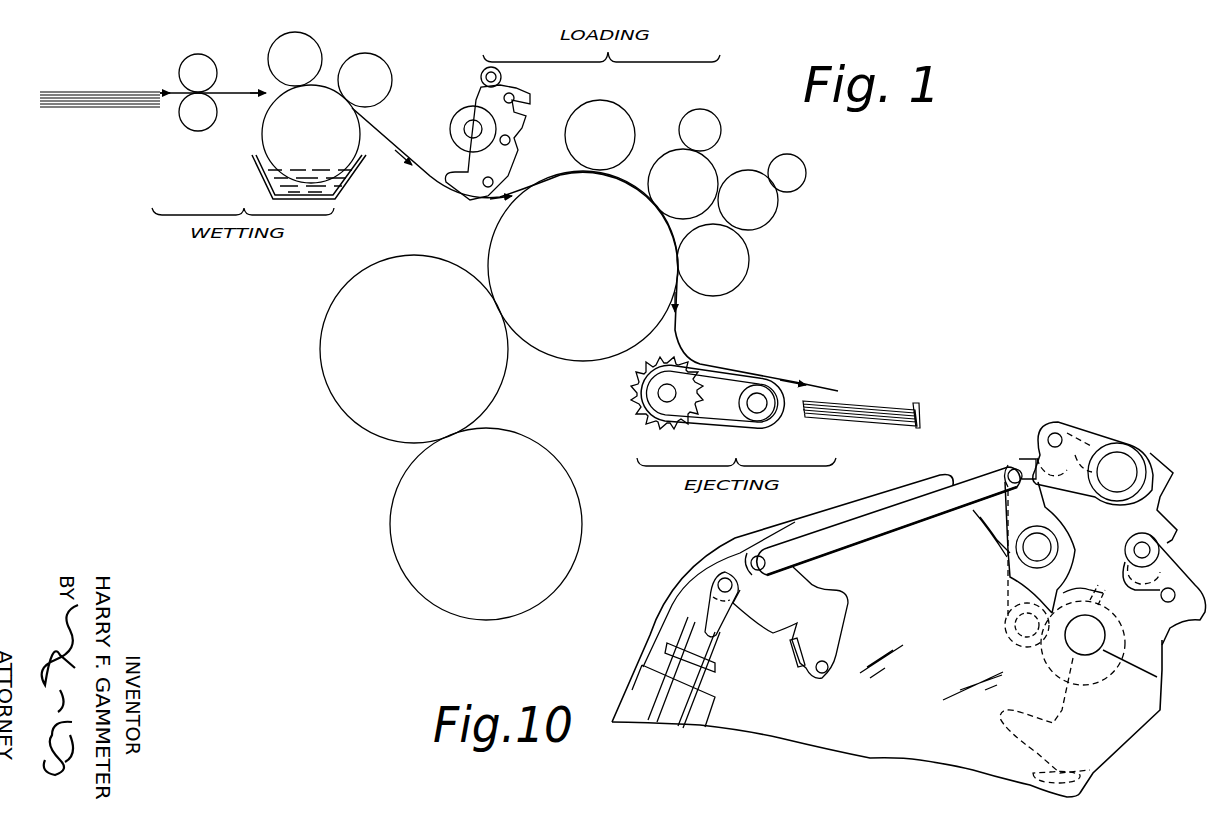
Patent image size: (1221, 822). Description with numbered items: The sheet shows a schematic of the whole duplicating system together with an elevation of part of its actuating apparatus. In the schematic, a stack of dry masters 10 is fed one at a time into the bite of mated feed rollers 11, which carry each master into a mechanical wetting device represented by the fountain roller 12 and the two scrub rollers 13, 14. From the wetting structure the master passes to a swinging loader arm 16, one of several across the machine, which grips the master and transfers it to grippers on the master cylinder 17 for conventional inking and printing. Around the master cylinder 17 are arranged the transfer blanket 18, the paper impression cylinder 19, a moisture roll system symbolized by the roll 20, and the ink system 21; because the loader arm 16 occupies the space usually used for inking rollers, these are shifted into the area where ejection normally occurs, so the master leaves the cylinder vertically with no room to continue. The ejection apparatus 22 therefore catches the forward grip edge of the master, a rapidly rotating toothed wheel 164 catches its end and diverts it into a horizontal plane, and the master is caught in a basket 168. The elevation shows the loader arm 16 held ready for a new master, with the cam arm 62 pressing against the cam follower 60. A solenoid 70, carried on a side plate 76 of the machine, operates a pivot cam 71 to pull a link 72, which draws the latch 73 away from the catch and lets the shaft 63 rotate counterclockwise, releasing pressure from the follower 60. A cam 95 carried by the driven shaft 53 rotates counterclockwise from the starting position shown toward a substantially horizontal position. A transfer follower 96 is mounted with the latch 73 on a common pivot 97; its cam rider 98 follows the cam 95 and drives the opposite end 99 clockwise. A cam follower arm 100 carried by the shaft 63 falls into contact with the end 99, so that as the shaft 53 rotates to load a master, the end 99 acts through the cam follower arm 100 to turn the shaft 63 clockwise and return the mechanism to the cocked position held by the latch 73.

In FIG. 1, the stack of dry masters 10 is at (78, 92).
In FIG. 1, the mated feed rollers 11 is at (204, 58).
In FIG. 1, the fountain roller 12 is at (309, 142).
In FIG. 1, the scrub roller 13 is at (306, 45).
In FIG. 1, the scrub roller 14 is at (378, 68).
In FIG. 1, the swinging loader arm 16 is at (505, 128).
In FIG. 1, the master cylinder 17 is at (583, 266).
In FIG. 1, the transfer blanket 18 is at (414, 349).
In FIG. 1, the paper impression cylinder 19 is at (486, 524).
In FIG. 1, the moisture roll 20 is at (600, 135).
In FIG. 1, the ink system 21 is at (740, 158).
In FIG. 1, the ejection apparatus 22 is at (742, 432).
In FIG. 1, the toothed wheel 164 is at (665, 428).
In FIG. 1, the basket 168 is at (880, 406).
In FIG. 10, the shaft 53 is at (1062, 692).
In FIG. 10, the cam follower 60 is at (1165, 547).
In FIG. 10, the cam arm 62 is at (1160, 518).
In FIG. 10, the shaft 63 is at (1117, 472).
In FIG. 10, the solenoid 70 is at (685, 650).
In FIG. 10, the pivot cam 71 is at (740, 563).
In FIG. 10, the link 72 is at (800, 545).
In FIG. 10, the latch 73 is at (892, 584).
In FIG. 10, the side plate 76 is at (667, 612).
In FIG. 10, the cam 95 is at (1088, 603).
In FIG. 10, the transfer follower 96 is at (1065, 540).
In FIG. 10, the common pivot 97 is at (1020, 553).
In FIG. 10, the cam rider 98 is at (1015, 645).
In FIG. 10, the end of transfer follower 99 is at (1019, 462).
In FIG. 10, the cam follower arm 100 is at (1056, 430).